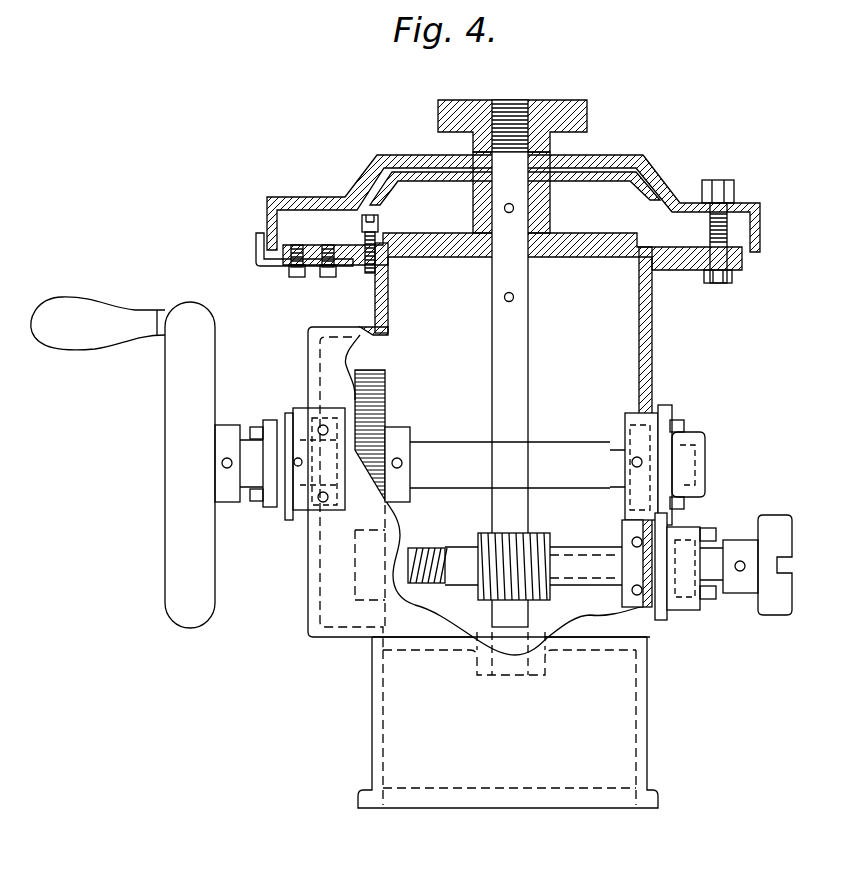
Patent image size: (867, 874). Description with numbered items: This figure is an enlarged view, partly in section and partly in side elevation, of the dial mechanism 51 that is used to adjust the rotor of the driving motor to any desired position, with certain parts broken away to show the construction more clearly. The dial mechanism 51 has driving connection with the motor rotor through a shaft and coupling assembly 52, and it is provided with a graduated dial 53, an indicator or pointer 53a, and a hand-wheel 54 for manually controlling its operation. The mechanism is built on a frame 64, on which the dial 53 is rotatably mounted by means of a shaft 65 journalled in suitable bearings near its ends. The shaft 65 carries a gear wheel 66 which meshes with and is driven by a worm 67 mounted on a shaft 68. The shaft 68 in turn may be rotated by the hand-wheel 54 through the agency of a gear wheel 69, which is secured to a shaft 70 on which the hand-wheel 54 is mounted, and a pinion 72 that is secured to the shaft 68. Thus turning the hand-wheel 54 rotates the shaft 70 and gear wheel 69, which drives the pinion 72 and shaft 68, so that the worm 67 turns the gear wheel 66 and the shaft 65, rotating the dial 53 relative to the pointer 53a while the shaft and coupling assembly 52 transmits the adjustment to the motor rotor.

The dial mechanism 51 is at (737, 329).
The shaft and coupling assembly 52 is at (775, 520).
The graduated dial 53 is at (768, 200).
The indicator or pointer 53a is at (256, 262).
The hand-wheel 54 is at (166, 458).
The frame 64 is at (652, 378).
The shaft 65 is at (530, 370).
The gear wheel 66 is at (432, 546).
The worm 67 is at (533, 536).
The shaft 68 is at (713, 548).
The gear wheel 69 is at (386, 408).
The shaft 70 is at (441, 445).
The pinion 72 is at (397, 540).